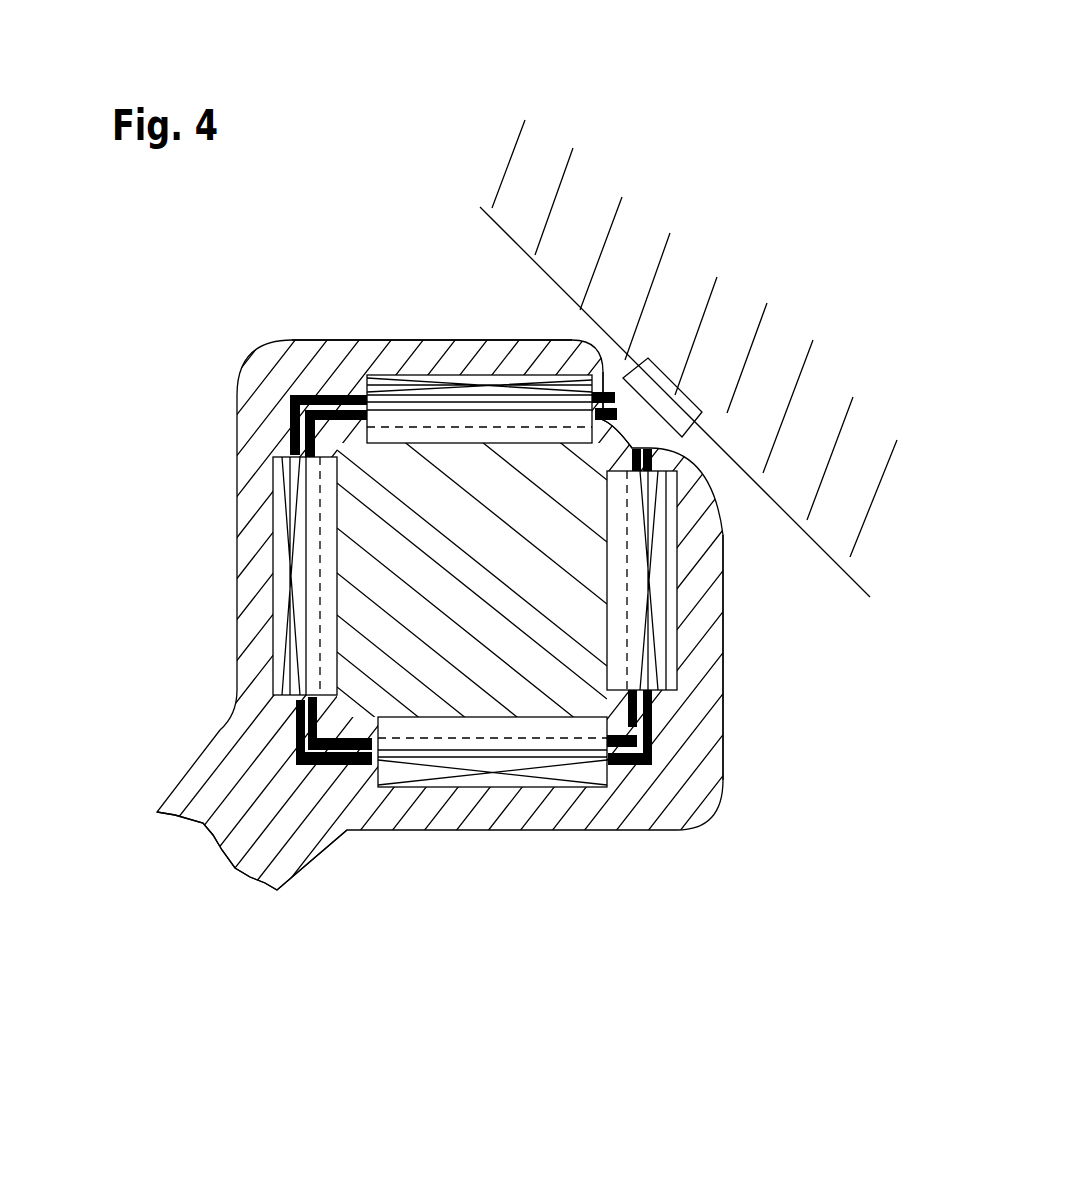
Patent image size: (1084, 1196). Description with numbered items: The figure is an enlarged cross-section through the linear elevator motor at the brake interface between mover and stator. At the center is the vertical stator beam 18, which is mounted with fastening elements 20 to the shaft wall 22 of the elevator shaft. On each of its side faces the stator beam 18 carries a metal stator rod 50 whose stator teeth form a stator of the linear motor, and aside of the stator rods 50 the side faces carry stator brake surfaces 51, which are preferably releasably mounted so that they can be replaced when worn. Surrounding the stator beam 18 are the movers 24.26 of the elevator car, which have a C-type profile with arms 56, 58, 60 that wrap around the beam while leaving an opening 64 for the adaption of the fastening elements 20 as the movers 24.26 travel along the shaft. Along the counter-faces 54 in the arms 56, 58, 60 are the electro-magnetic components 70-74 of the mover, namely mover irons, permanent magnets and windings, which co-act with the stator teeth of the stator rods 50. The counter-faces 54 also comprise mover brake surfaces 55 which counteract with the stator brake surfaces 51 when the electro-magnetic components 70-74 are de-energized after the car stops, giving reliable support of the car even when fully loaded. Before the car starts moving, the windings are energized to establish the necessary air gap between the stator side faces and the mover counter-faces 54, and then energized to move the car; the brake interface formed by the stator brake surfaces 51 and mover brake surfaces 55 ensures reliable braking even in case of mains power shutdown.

The stator beam 18 is at (630, 583).
The fastening elements 20 is at (635, 400).
The shaft wall 22 is at (515, 197).
The movers 24.26 is at (241, 865).
The stator rod 50 is at (482, 420).
The stator brake surfaces 51 is at (634, 462).
The counter-faces 54 is at (640, 612).
The mover brake surfaces 55 is at (612, 398).
The arm 56 is at (260, 615).
The arm 58 is at (392, 385).
The arm 60 is at (710, 682).
The opening 64 is at (615, 345).
The electro-magnetic components 70-74 is at (452, 403).